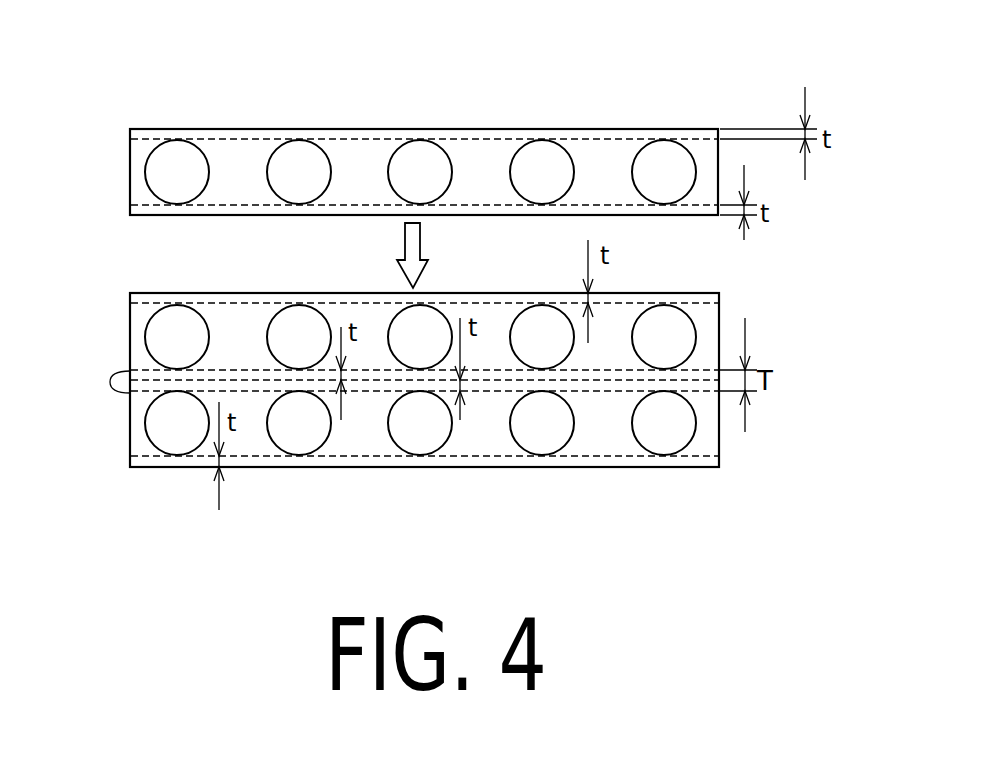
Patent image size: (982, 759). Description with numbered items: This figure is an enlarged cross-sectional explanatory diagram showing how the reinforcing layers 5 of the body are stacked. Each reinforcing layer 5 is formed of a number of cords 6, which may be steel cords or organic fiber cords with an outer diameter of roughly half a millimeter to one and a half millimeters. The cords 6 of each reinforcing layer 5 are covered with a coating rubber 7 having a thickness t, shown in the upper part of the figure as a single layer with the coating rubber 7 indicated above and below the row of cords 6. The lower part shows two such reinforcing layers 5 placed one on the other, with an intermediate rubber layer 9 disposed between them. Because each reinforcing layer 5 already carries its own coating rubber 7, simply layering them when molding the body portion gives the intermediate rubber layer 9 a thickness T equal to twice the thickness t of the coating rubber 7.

The reinforcing layer 5 is at (128, 180).
The cord 6 is at (298, 153).
The coating rubber 7 is at (483, 138).
The intermediate rubber layer 9 is at (111, 382).